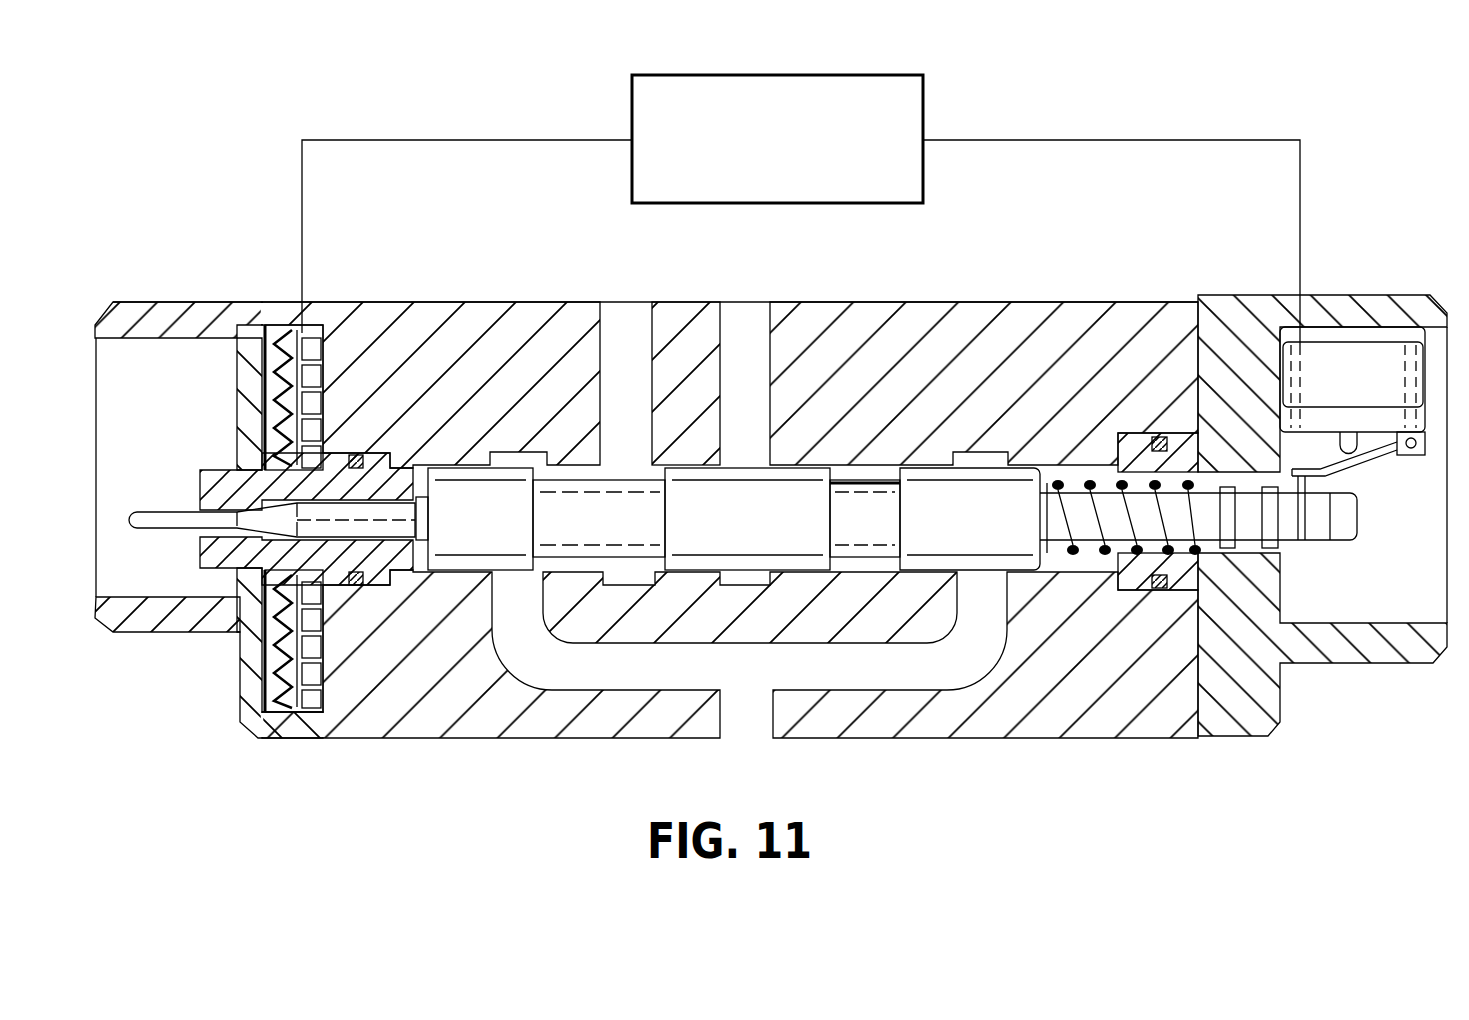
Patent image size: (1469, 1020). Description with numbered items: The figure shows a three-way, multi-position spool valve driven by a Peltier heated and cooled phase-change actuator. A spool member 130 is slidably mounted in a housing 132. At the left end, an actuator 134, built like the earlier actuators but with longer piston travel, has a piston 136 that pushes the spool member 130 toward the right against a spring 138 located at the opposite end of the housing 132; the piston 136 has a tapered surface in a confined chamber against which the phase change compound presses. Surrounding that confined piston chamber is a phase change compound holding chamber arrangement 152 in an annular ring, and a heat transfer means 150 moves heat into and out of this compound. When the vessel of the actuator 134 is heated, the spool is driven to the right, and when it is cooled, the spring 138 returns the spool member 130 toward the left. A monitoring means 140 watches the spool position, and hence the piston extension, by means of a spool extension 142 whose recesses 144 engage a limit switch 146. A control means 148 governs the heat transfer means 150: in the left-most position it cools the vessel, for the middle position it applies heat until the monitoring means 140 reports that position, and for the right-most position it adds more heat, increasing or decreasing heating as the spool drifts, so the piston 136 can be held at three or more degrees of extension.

The spool member 130 is at (873, 500).
The housing 132 is at (1025, 707).
The actuator 134 is at (278, 578).
The piston 136 is at (405, 495).
The spring 138 is at (1048, 482).
The monitoring means 140 is at (1355, 363).
The spool extension 142 is at (1353, 535).
The recesses 144 is at (1280, 512).
The limit switch 146 is at (1386, 388).
The control means 148 is at (925, 93).
The heat transfer means 150 is at (328, 333).
The phase change compound holding chamber arrangement 152 is at (285, 712).